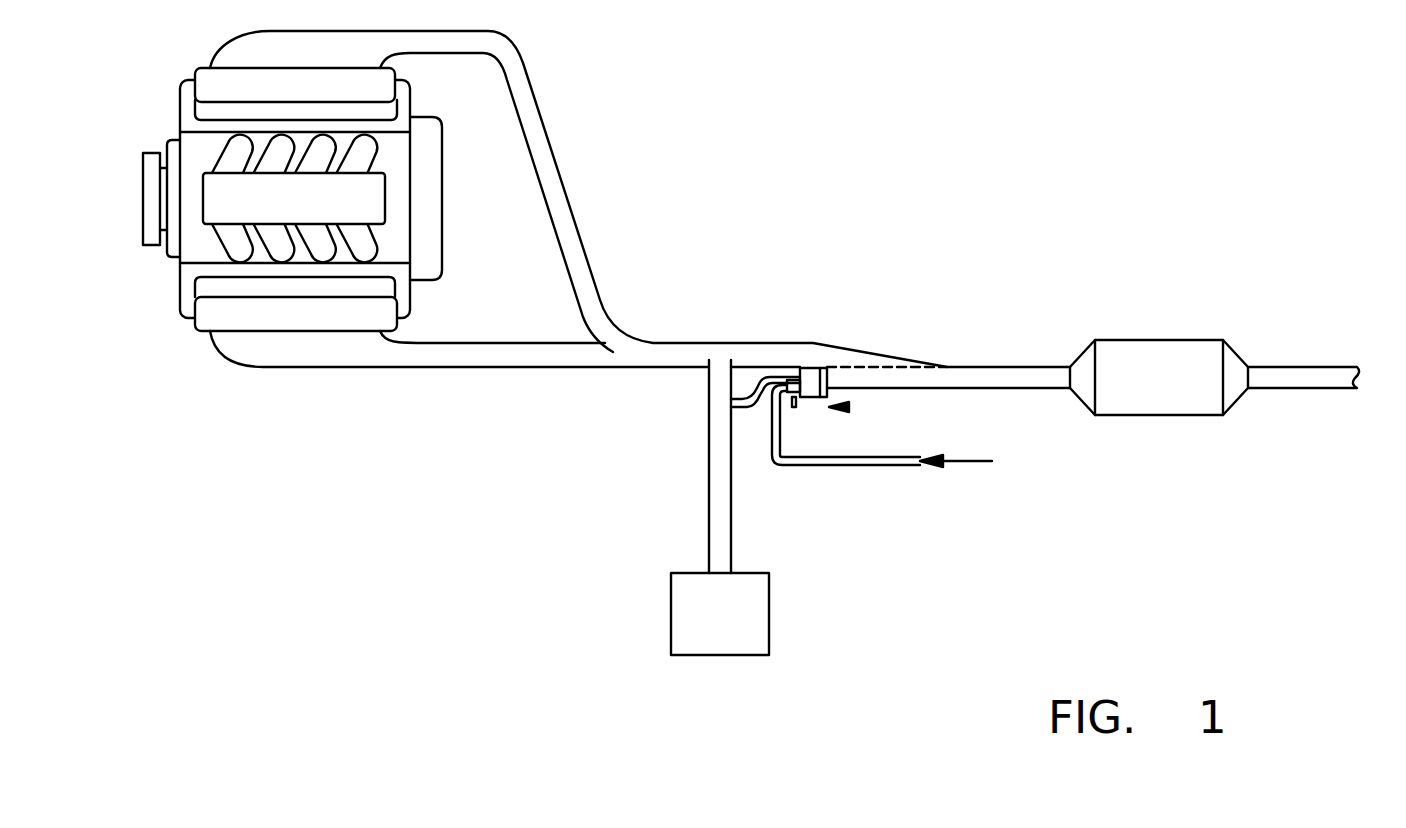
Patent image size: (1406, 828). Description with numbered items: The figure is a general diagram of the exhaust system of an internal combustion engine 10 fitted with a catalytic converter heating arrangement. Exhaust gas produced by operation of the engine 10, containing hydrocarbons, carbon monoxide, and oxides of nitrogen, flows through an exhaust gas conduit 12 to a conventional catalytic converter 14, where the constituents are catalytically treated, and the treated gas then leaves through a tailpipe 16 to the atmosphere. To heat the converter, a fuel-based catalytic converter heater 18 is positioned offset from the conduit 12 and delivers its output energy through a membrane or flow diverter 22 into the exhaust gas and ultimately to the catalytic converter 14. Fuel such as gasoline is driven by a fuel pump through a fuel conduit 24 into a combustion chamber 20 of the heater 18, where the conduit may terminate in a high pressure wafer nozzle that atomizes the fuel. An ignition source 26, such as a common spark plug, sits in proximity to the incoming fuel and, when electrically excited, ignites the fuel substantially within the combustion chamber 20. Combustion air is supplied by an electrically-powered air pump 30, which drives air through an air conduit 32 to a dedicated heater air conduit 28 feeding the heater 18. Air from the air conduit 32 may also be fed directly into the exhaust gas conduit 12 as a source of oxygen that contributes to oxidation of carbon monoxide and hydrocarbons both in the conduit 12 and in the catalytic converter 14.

The internal combustion engine 10 is at (190, 213).
The exhaust gas conduit 12 is at (498, 358).
The catalytic converter 14 is at (1168, 362).
The tailpipe 16 is at (1305, 377).
The catalytic converter heater 18 is at (849, 407).
The combustion chamber 20 is at (810, 370).
The membrane or flow diverter 22 is at (853, 362).
The fuel conduit 24 is at (832, 465).
The ignition source 26 is at (797, 410).
The dedicated heater air conduit 28 is at (740, 410).
The air pump 30 is at (683, 592).
The air conduit 32 is at (718, 458).